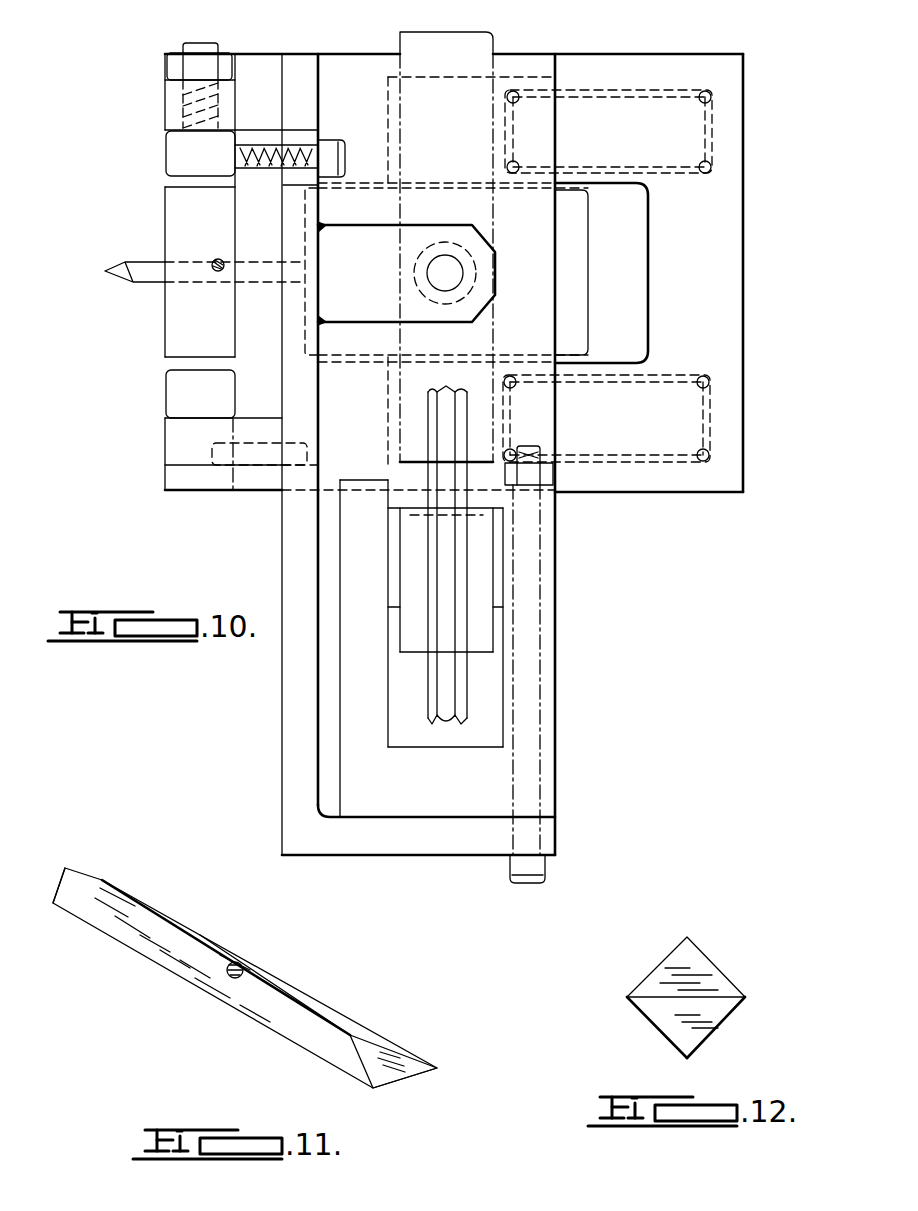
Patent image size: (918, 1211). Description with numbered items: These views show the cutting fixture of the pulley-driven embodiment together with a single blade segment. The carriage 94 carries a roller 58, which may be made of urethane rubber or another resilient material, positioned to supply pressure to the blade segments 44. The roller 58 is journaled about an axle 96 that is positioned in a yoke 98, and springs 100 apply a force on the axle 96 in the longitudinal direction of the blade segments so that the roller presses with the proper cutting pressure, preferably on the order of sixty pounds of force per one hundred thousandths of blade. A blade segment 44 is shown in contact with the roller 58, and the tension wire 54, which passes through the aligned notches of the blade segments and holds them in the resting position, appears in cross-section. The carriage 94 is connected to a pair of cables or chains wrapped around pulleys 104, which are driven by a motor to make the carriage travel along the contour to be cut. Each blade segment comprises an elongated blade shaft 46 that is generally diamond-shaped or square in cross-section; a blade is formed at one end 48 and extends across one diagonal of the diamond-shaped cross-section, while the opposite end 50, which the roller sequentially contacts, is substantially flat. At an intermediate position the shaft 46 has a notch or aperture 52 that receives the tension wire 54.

In FIG. 10, the blade segment 44 is at (135, 272).
In FIG. 11, the blade segment 44 is at (228, 910).
In FIG. 12, the blade segment 44 is at (707, 957).
In FIG. 11, the blade shaft 46 is at (310, 1000).
In FIG. 11, the blade end 48 is at (415, 1078).
In FIG. 12, the blade end 48 is at (665, 997).
In FIG. 11, the opposite end 50 is at (78, 870).
In FIG. 11, the notch or aperture 52 is at (241, 966).
In FIG. 10, the tension wire 54 is at (223, 259).
In FIG. 10, the roller 58 is at (578, 264).
In FIG. 10, the carriage 94 is at (650, 480).
In FIG. 10, the axle 96 is at (400, 40).
In FIG. 10, the yoke 98 is at (388, 100).
In FIG. 10, the springs 100 is at (636, 102).
In FIG. 10, the pulleys 104 is at (465, 698).